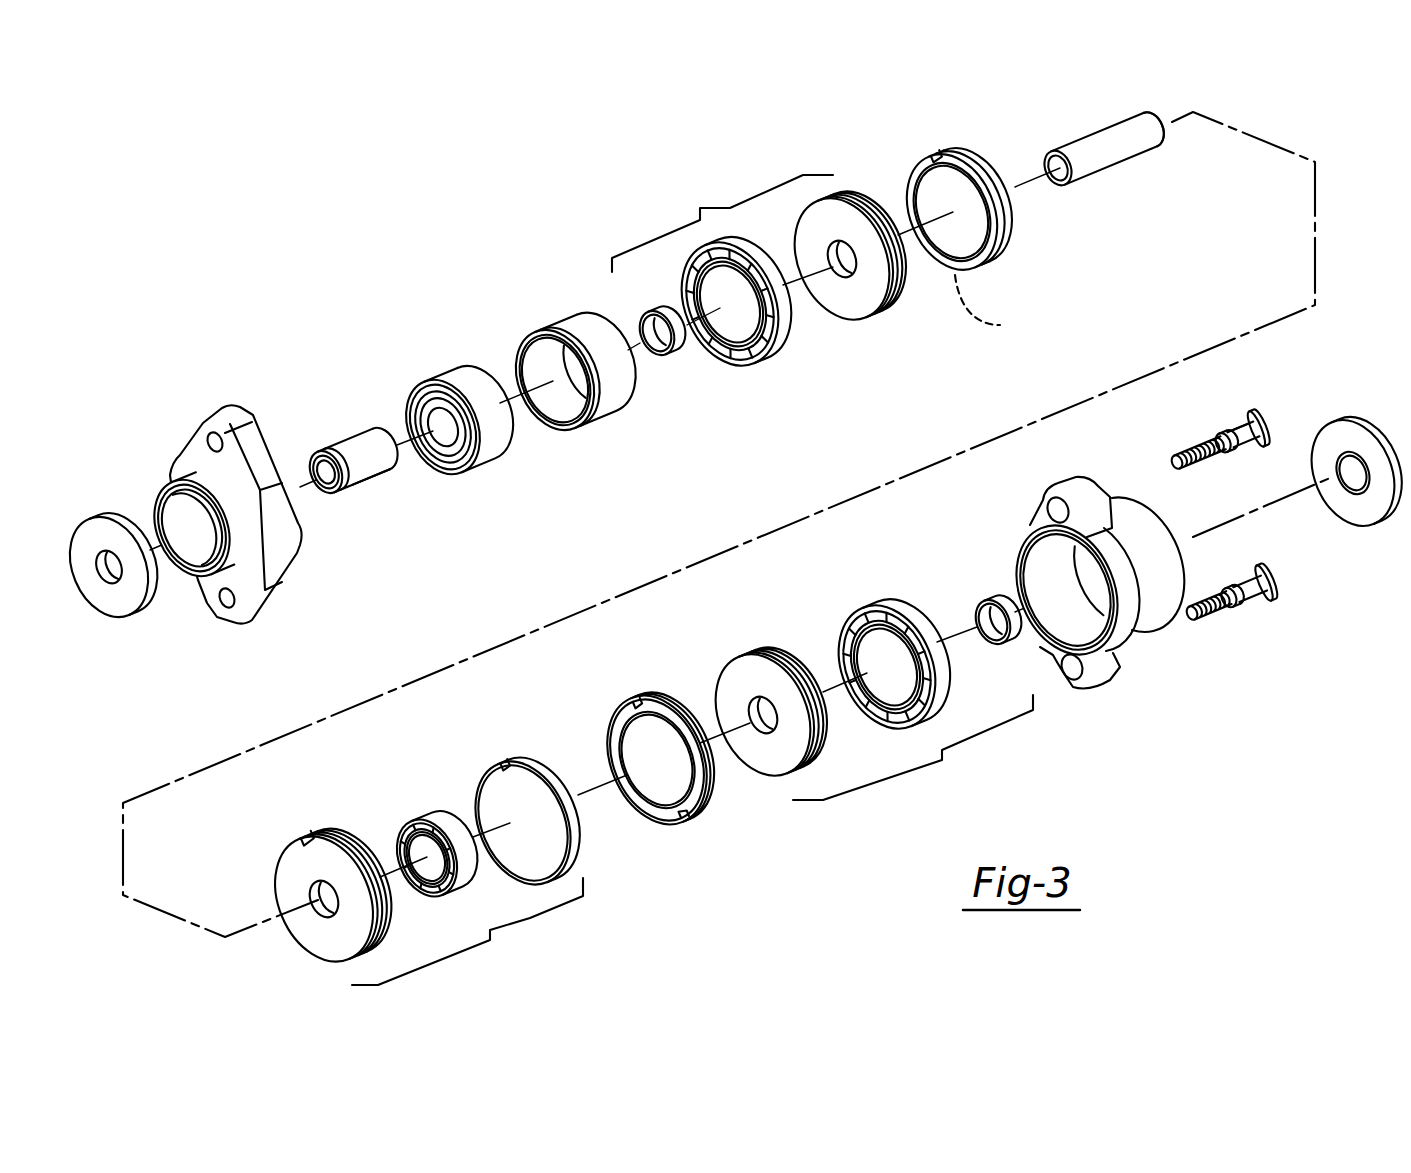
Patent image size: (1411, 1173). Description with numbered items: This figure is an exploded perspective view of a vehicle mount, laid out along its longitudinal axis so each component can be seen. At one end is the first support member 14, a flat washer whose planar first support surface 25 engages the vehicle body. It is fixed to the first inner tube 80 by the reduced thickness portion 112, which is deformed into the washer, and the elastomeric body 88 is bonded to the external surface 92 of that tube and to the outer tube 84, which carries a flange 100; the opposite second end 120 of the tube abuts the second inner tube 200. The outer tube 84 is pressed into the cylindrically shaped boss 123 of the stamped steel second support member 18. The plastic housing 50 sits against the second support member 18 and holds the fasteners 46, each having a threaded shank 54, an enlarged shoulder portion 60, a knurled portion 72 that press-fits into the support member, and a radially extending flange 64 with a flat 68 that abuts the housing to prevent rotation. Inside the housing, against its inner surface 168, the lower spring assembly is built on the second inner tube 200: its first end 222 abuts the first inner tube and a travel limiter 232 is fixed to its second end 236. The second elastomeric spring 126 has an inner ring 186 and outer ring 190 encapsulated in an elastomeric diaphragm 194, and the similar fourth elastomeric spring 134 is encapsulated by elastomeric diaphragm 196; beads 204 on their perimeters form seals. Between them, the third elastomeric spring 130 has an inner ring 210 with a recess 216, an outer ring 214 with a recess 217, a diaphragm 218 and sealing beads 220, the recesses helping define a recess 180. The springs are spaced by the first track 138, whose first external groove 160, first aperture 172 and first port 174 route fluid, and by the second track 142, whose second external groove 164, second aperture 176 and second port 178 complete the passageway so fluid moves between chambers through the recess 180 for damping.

The first support member 14 is at (112, 506).
The first support surface 25 is at (112, 603).
The second support member 18 is at (232, 396).
The cylindrically shaped boss 123 is at (200, 487).
The reduced thickness portion 112 is at (322, 455).
The external surface 92 is at (360, 447).
The first inner tube 80 is at (368, 494).
The second end 120 is at (393, 465).
The elastomeric body 88 is at (467, 405).
The flange 100 is at (536, 345).
The outer tube 84 is at (597, 420).
The second elastomeric spring 126 is at (722, 223).
The inner ring 186 is at (680, 350).
The outer ring 190 is at (770, 354).
The elastomeric diaphragm 194 is at (858, 314).
The beads 204 is at (897, 290).
The first track 138 is at (915, 145).
The first port 174 is at (958, 154).
The first external groove 160 is at (1000, 250).
The first aperture 172 is at (994, 307).
The second inner tube 200 is at (1107, 140).
The first end 222 is at (1070, 190).
The second end 236 is at (1165, 137).
The diaphragm 218 is at (322, 947).
The beads 220 is at (305, 844).
The recess 180 is at (330, 838).
The inner ring 210 is at (410, 822).
The recess 216 is at (444, 822).
The outer ring 214 is at (490, 763).
The recess 217 is at (527, 763).
The second track 142 is at (619, 689).
The second external groove 164 is at (692, 790).
The second port 178 is at (650, 708).
The second aperture 176 is at (625, 808).
The elastomeric diaphragm 196 is at (748, 673).
The third elastomeric spring 130 is at (467, 931).
The fourth elastomeric spring 134 is at (913, 747).
The plastic housing 50 is at (1137, 658).
The inner surface 168 is at (1020, 560).
The fasteners 46 is at (1268, 396).
The threaded shank 54 is at (1185, 453).
The enlarged shoulder portion 60 is at (1235, 437).
The knurled portion 72 is at (1220, 452).
The radially extending flange 64 is at (1262, 424).
The flat 68 is at (1255, 578).
The travel limiter 232 is at (1369, 395).